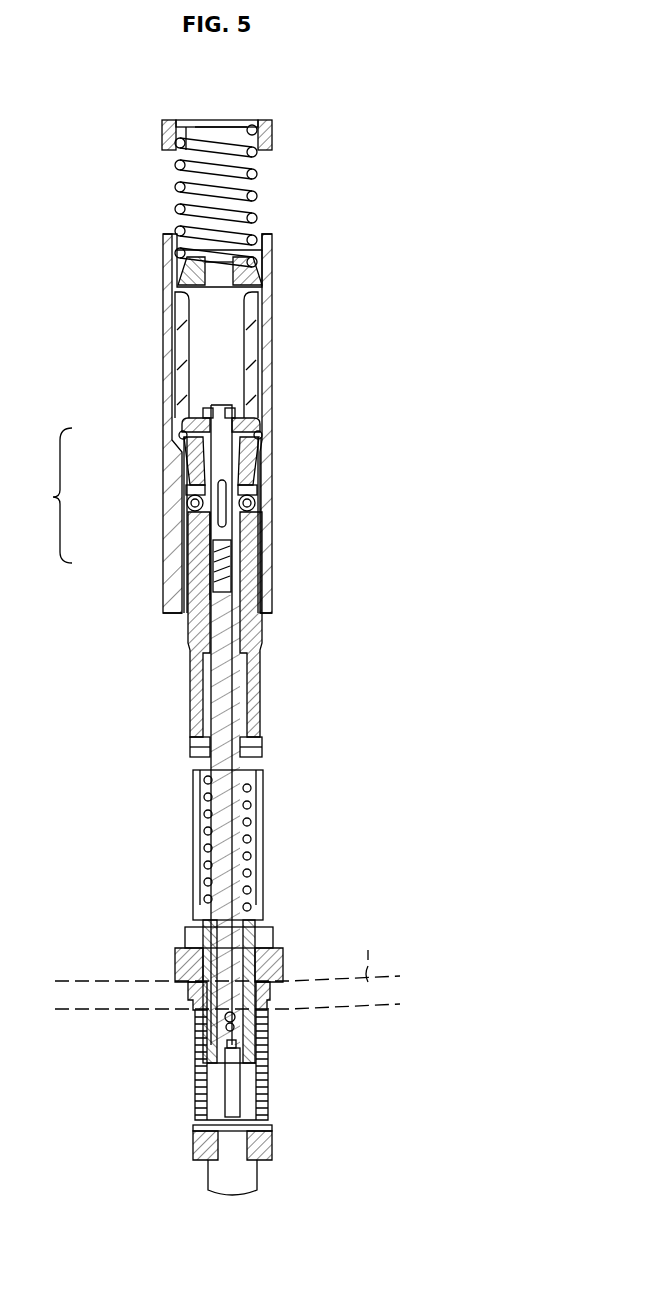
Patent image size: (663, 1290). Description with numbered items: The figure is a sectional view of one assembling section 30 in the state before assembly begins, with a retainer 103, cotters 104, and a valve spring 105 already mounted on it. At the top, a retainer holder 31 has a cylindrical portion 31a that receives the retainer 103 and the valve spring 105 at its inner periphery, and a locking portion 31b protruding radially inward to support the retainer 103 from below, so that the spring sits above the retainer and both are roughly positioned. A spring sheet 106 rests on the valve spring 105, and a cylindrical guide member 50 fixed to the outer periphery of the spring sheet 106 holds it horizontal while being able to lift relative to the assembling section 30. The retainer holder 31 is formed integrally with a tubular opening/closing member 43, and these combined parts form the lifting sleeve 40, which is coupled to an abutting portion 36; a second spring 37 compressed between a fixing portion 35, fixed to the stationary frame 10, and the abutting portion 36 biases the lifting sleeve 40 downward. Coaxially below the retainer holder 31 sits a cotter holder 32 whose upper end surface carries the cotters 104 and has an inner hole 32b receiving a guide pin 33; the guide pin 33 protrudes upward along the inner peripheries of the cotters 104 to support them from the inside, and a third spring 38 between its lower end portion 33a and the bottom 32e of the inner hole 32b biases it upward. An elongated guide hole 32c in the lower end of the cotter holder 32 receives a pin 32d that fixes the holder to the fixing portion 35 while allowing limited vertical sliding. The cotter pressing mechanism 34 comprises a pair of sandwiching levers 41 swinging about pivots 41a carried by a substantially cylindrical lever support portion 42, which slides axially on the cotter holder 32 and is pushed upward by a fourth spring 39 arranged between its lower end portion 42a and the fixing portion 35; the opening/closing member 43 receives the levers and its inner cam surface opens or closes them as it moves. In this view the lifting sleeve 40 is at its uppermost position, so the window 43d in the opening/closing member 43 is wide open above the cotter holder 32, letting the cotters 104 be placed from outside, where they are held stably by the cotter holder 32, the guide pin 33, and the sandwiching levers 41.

The stationary frame 10 is at (227, 967).
The assembling section 30 is at (407, 302).
The retainer holder 31 is at (162, 245).
The cylindrical portion 31a is at (177, 270).
The locking portion 31b is at (181, 308).
The cotter holder 32 is at (231, 632).
The inner hole 32b is at (234, 542).
The guide hole 32c is at (225, 1018).
The pin 32d is at (241, 1027).
The bottom 32e is at (183, 598).
The guide pin 33 is at (237, 447).
The lower end portion 33a is at (210, 563).
The cotter pressing mechanism 34 is at (192, 501).
The fixing portion 35 is at (174, 962).
The abutting portion 36 is at (208, 1178).
The second spring 37 is at (269, 1082).
The third spring 38 is at (233, 573).
The fourth spring 39 is at (246, 807).
The lifting sleeve 40 is at (276, 323).
The sandwiching levers 41 is at (259, 470).
The pivot 41a is at (256, 500).
The lever support portion 42 is at (183, 546).
The lower end portion 42a is at (250, 752).
The opening/closing member 43 is at (167, 407).
The window 43d is at (247, 341).
The guide member 50 is at (229, 184).
The retainer 103 is at (263, 277).
The cotters 104 is at (238, 410).
The valve spring 105 is at (258, 173).
The spring sheet 106 is at (262, 118).